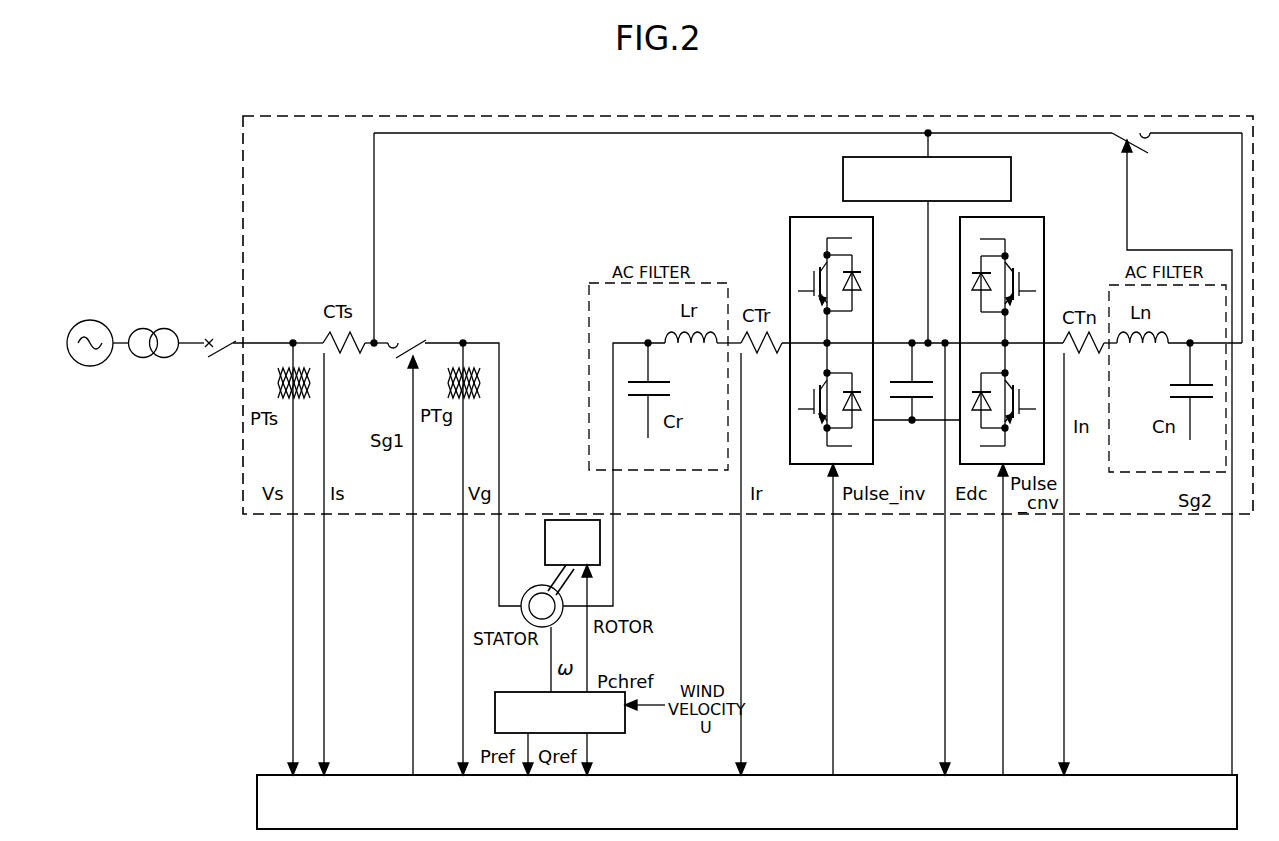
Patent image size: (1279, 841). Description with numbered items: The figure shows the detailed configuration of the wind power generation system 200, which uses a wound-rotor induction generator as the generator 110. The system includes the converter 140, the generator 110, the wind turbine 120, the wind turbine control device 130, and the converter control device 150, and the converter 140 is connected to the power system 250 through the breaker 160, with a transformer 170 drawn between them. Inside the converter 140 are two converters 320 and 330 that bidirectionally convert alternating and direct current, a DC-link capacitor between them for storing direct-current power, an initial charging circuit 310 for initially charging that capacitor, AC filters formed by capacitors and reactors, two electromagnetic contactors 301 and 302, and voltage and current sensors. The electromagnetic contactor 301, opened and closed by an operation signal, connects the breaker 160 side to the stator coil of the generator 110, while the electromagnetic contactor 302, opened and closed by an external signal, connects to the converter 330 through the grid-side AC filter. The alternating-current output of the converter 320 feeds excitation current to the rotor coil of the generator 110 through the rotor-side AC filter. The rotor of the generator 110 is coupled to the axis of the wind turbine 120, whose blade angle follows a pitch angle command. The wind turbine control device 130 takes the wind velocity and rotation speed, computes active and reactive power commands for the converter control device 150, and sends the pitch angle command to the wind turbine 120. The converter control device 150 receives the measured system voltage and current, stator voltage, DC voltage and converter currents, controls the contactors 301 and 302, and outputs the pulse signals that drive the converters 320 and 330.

The wind power generation system 200 is at (808, 100).
The converter 140 is at (243, 140).
The power system 250 is at (95, 320).
The transformer 170 is at (150, 358).
The breaker 160 is at (220, 338).
The electromagnetic contactor 301 is at (417, 338).
The electromagnetic contactor 302 is at (1142, 156).
The initial charging circuit 310 is at (1011, 178).
The converter 320 is at (790, 232).
The converter 330 is at (1044, 238).
The wind turbine 120 is at (600, 543).
The generator 110 is at (560, 600).
The wind turbine control device 130 is at (625, 728).
The converter control device 150 is at (257, 800).